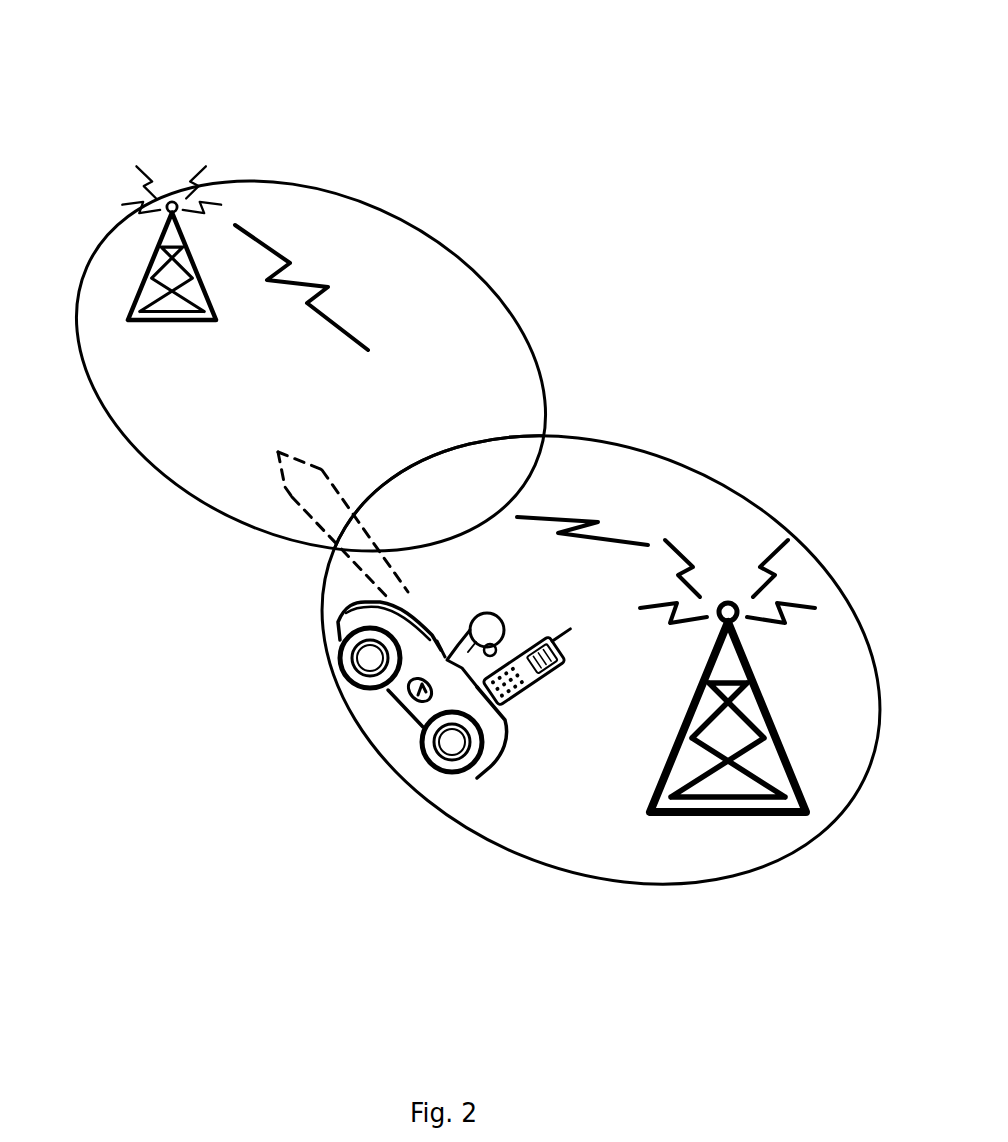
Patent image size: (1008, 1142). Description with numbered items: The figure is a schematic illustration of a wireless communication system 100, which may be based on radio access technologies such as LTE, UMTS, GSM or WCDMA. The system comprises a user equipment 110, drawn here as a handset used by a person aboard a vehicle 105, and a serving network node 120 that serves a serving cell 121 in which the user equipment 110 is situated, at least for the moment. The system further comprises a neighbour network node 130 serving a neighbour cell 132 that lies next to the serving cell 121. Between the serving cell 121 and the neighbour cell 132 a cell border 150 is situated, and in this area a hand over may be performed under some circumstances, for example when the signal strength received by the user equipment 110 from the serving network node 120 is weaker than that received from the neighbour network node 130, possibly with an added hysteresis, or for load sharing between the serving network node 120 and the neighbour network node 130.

The wireless communication system 100 is at (748, 83).
The vehicle 105 is at (328, 630).
The user equipment 110 is at (549, 676).
The serving network node 120 is at (653, 813).
The serving cell 121 is at (512, 819).
The neighbour network node 130 is at (150, 263).
The neighbour cell 132 is at (210, 485).
The cell border 150 is at (460, 485).